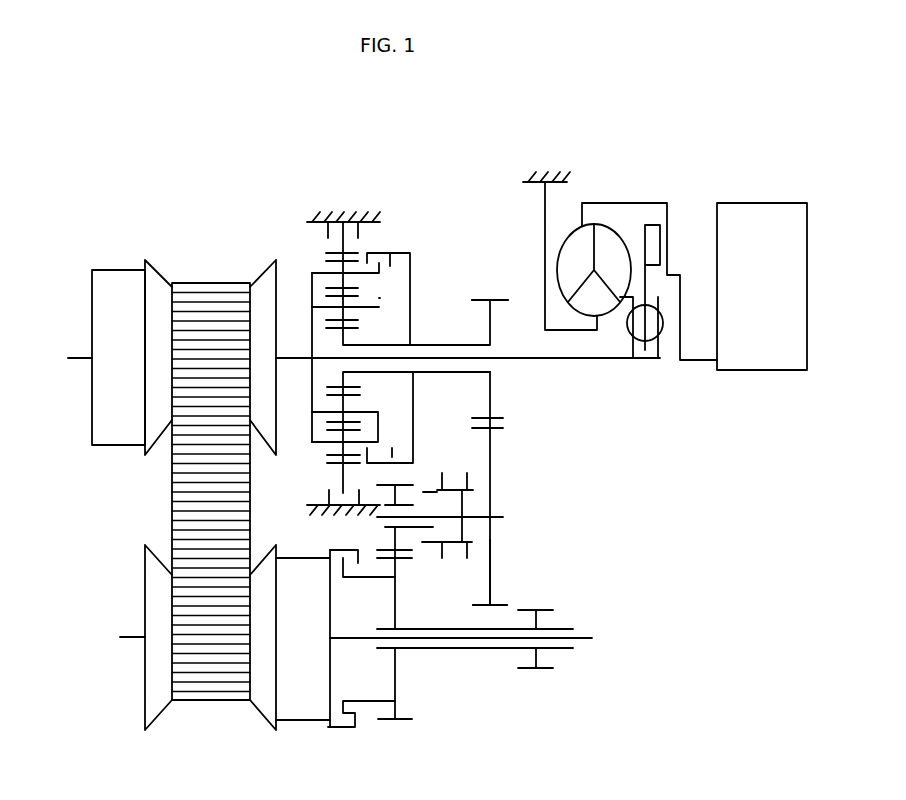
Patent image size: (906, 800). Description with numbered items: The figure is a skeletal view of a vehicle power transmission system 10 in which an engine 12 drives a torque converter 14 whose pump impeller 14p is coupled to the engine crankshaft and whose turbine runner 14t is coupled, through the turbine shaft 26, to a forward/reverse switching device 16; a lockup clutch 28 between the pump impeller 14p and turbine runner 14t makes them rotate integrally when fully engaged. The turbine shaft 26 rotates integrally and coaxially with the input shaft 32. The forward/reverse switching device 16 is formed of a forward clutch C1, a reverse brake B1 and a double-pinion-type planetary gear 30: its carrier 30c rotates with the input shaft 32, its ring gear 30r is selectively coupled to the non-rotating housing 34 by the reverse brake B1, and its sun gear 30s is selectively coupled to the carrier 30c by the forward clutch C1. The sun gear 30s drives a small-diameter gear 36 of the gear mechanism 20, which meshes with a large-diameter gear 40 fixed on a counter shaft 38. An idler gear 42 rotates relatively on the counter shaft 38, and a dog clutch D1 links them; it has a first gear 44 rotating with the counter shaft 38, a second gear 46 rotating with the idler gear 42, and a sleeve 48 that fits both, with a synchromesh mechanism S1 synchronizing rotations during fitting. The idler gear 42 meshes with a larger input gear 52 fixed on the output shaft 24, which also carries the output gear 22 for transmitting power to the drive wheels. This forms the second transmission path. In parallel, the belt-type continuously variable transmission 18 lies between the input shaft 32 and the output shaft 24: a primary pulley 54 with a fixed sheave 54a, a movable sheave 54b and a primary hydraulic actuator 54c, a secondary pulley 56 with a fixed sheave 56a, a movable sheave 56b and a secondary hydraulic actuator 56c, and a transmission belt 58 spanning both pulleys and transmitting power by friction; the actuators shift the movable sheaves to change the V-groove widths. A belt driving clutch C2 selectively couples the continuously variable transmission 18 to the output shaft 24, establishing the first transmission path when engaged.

The vehicle power transmission system 10 is at (654, 112).
The engine 12 is at (782, 215).
The torque converter 14 is at (614, 332).
The pump impeller 14p is at (572, 248).
The turbine runner 14t is at (612, 250).
The forward/reverse switching device 16 is at (408, 216).
The belt-type continuously variable transmission 18 is at (200, 226).
The gear mechanism 20 is at (528, 427).
The output gear 22 is at (540, 669).
The output shaft 24 is at (465, 651).
The turbine shaft 26 is at (525, 357).
The lockup clutch 28 is at (653, 245).
The double-pinion-type planetary gear 30 is at (396, 283).
The carrier 30c is at (381, 298).
The ring gear 30r is at (336, 466).
The sun gear 30s is at (352, 374).
The input shaft 32 is at (312, 357).
The housing 34 is at (345, 221).
The small-diameter gear 36 is at (497, 299).
The counter shaft 38 is at (503, 518).
The large-diameter gear 40 is at (476, 605).
The idler gear 42 is at (380, 550).
The first gear 44 is at (468, 559).
The second gear 46 is at (437, 499).
The sleeve 48 is at (450, 477).
The input gear 52 is at (397, 722).
The primary pulley 54 is at (84, 306).
The fixed sheave 54a is at (266, 286).
The movable sheave 54b is at (160, 282).
The primary hydraulic actuator 54c is at (118, 282).
The secondary pulley 56 is at (100, 636).
The fixed sheave 56a is at (143, 597).
The movable sheave 56b is at (262, 702).
The secondary hydraulic actuator 56c is at (298, 722).
The transmission belt 58 is at (172, 496).
The reverse brake B1 is at (324, 244).
The forward clutch C1 is at (388, 287).
The belt driving clutch C2 is at (361, 655).
The dog clutch D1 is at (448, 440).
The synchromesh mechanism S1 is at (432, 550).